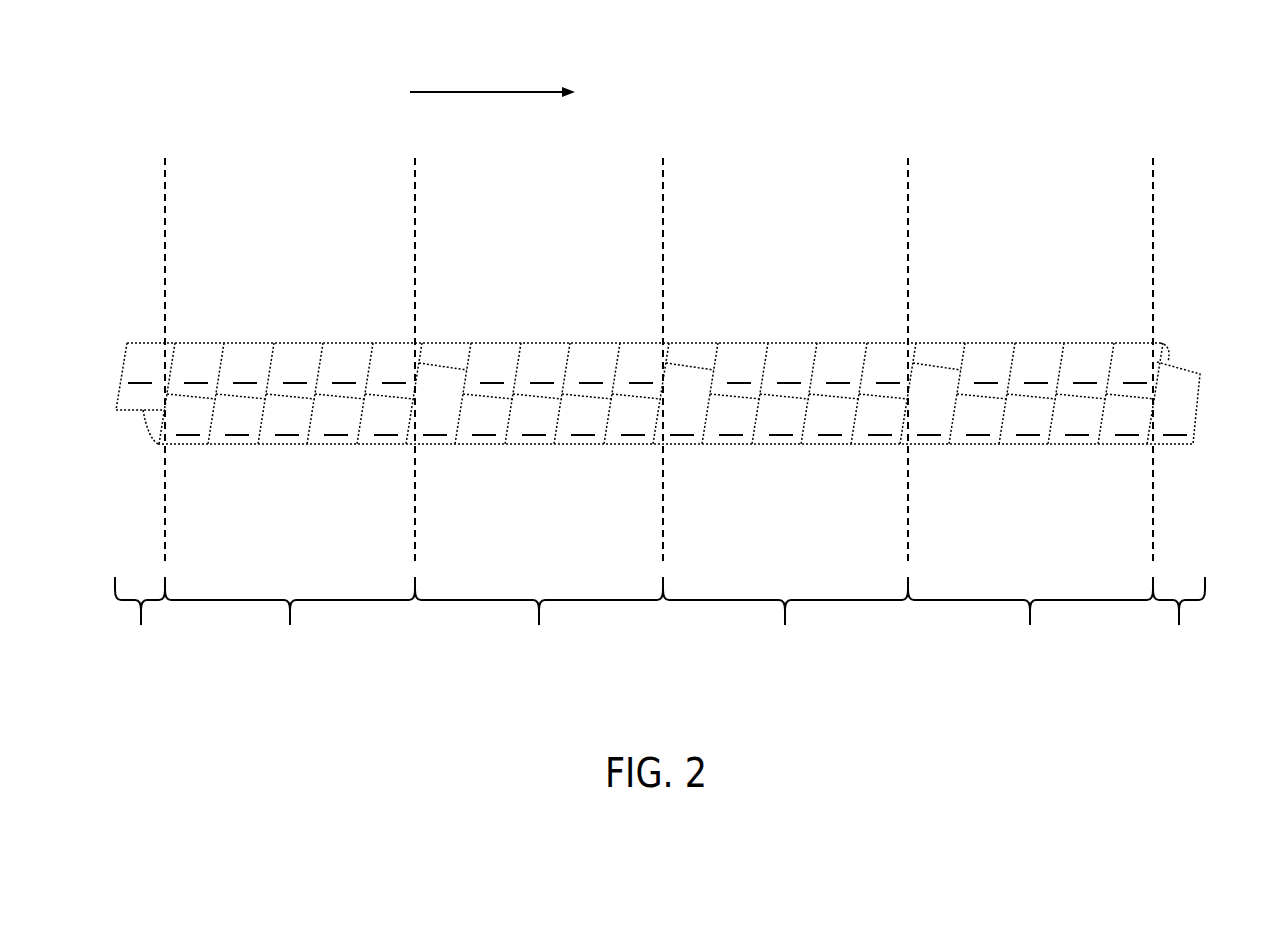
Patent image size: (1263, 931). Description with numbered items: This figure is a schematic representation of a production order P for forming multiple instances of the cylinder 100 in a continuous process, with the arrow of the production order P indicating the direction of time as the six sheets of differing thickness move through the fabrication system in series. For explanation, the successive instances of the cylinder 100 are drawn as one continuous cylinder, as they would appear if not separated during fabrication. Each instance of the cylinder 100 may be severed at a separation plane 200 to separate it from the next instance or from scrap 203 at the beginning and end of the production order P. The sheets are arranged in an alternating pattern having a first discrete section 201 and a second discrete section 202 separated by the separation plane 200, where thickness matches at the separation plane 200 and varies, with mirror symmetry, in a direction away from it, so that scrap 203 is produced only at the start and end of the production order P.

The cylinder 100 is at (1073, 276).
The separation plane 200 is at (165, 185).
The first discrete section 201 is at (542, 620).
The second discrete section 202 is at (784, 620).
The scrap 203 is at (660, 620).
The production order P is at (473, 92).